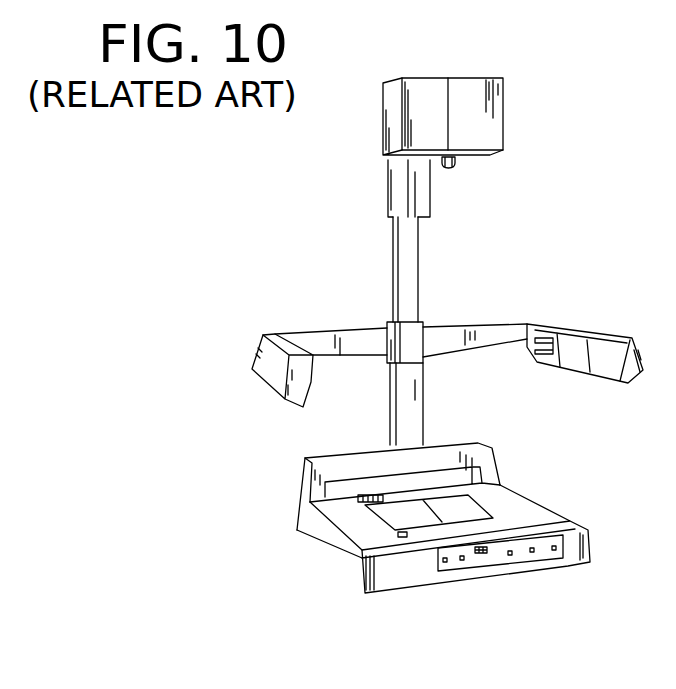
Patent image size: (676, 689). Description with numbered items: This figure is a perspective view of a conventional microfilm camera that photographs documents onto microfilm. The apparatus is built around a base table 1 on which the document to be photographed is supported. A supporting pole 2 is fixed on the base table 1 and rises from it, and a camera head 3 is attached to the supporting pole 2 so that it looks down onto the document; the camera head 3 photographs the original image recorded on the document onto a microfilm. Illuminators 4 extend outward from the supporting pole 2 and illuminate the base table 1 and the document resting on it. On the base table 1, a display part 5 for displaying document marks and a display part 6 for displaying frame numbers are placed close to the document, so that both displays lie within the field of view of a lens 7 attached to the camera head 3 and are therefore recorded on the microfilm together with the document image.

The base table 1 is at (338, 510).
The supporting pole 2 is at (423, 400).
The camera head 3 is at (500, 77).
The illuminators 4 is at (262, 348).
The display part 5 is at (402, 538).
The display part 6 is at (357, 500).
The lens 7 is at (448, 168).